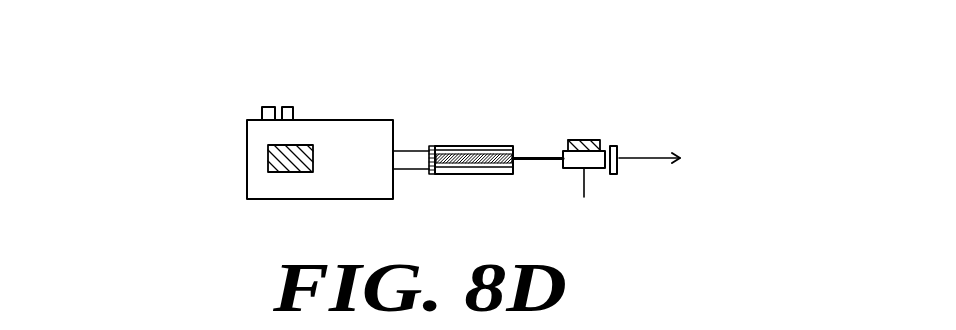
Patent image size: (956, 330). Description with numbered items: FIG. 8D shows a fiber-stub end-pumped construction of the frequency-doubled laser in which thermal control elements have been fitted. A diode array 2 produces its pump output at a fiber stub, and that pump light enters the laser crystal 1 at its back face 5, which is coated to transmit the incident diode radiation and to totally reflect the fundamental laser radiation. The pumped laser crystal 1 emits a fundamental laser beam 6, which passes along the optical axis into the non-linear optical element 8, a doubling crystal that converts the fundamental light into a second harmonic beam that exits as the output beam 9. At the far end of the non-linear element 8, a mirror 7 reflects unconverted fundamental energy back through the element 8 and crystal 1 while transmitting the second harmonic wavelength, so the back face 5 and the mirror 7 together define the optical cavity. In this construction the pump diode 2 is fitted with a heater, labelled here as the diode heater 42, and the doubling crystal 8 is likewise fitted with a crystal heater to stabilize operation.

The laser crystal 1 is at (468, 146).
The diode array 2 is at (327, 120).
The back face 5 is at (432, 146).
The fundamental laser beam 6 is at (540, 158).
The mirror 7 is at (614, 146).
The non-linear optical element 8 is at (585, 184).
The output beam 9 is at (660, 162).
The diode heater 42 is at (270, 160).